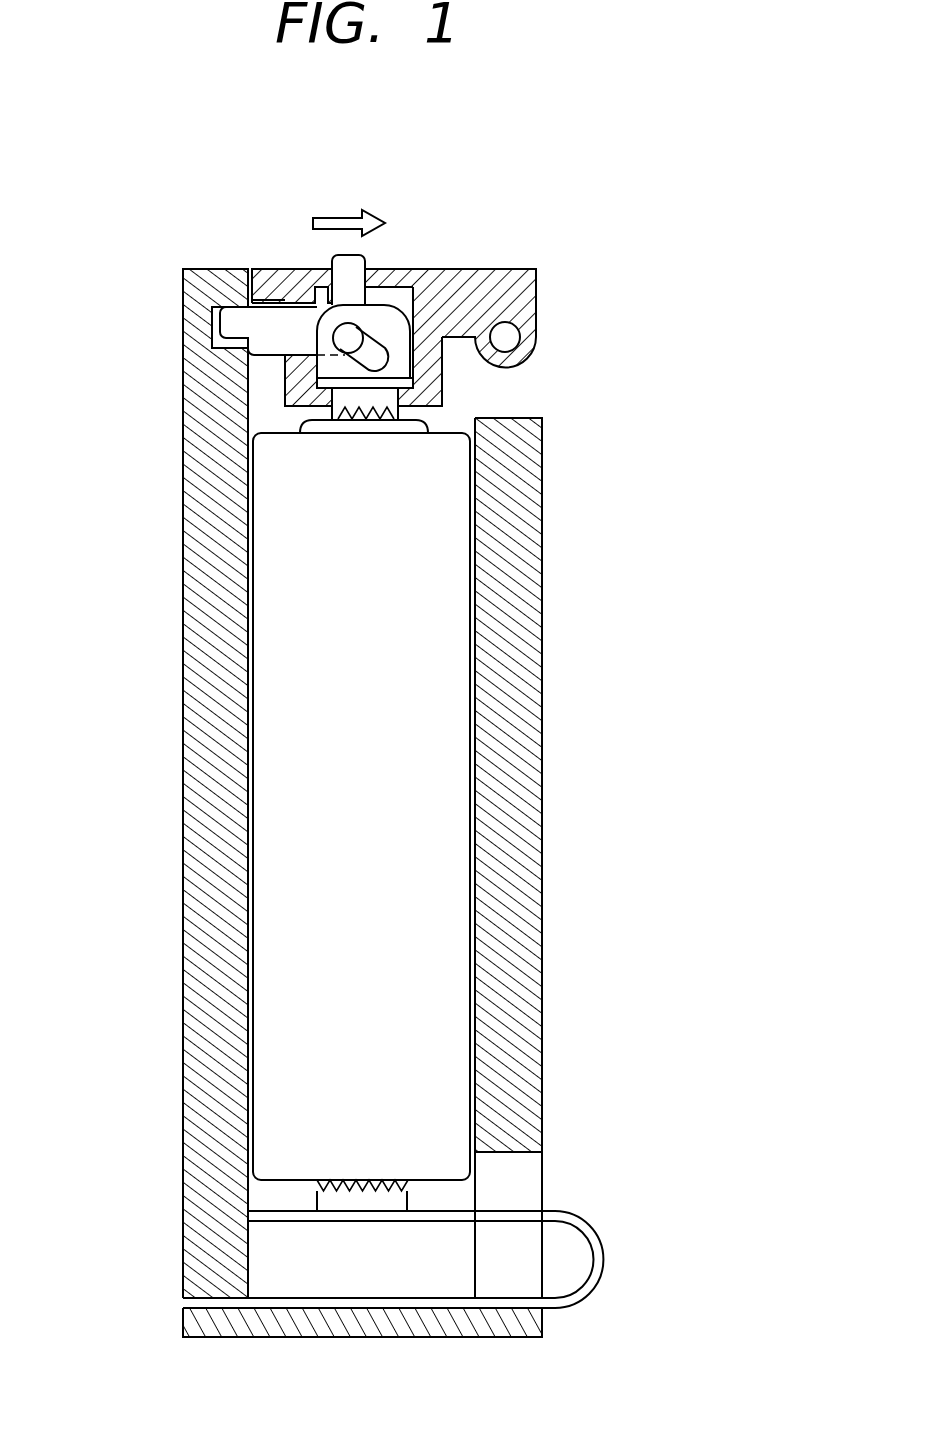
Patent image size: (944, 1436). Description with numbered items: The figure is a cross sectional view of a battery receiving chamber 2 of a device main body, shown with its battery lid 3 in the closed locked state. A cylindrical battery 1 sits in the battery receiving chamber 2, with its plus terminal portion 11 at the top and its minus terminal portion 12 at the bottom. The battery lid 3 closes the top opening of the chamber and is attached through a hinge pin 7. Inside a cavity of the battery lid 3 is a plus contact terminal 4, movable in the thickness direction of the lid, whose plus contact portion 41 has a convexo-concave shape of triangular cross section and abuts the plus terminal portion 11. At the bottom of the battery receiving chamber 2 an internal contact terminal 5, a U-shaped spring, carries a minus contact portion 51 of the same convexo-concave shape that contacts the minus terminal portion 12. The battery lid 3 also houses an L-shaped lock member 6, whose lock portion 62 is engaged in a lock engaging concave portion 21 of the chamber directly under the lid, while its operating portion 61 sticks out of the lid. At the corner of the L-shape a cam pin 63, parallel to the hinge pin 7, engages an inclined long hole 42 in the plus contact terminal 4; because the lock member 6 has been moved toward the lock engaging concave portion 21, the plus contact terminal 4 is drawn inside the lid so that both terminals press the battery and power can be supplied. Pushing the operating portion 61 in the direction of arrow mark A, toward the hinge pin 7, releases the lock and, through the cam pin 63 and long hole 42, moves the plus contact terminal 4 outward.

The battery 1 is at (446, 866).
The battery receiving chamber 2 is at (198, 787).
The battery lid 3 is at (273, 272).
The plus contact terminal 4 is at (364, 344).
The internal contact terminal 5 is at (585, 1228).
The lock member 6 is at (219, 305).
The hinge pin 7 is at (514, 343).
The plus terminal portion 11 is at (430, 347).
The minus terminal portion 12 is at (283, 1180).
The lock engaging concave portion 21 is at (222, 350).
The plus contact portion 41 is at (382, 408).
The long hole 42 is at (373, 365).
The minus contact portion 51 is at (383, 1185).
The operating portion 61 is at (340, 258).
The lock portion 62 is at (270, 328).
The cam pin 63 is at (338, 340).
The arrow mark A is at (343, 222).